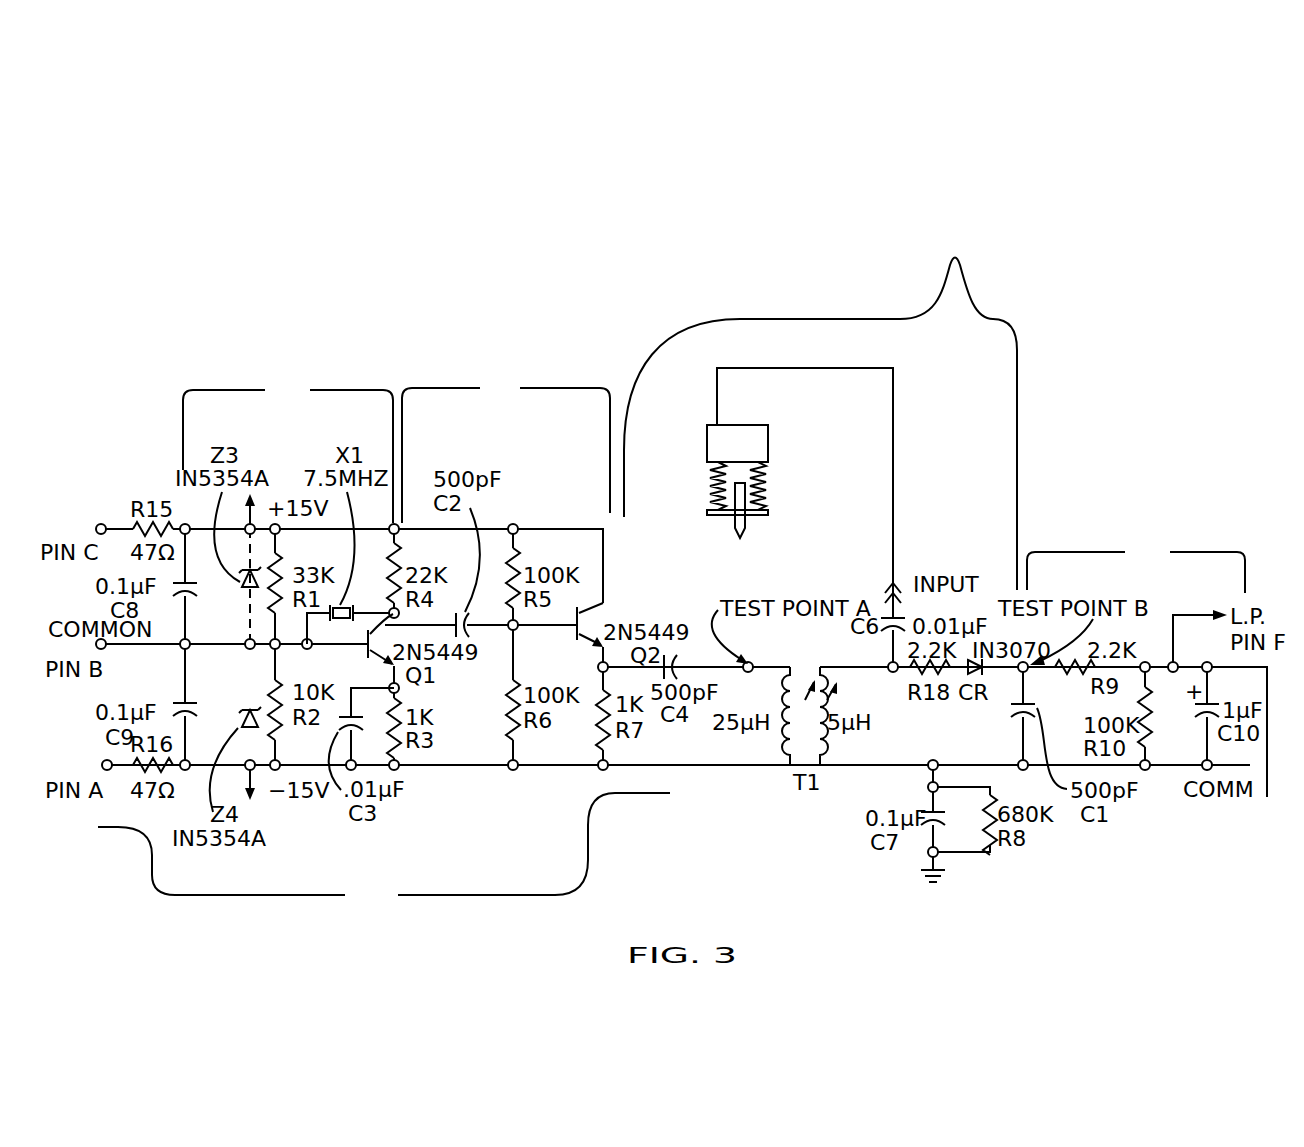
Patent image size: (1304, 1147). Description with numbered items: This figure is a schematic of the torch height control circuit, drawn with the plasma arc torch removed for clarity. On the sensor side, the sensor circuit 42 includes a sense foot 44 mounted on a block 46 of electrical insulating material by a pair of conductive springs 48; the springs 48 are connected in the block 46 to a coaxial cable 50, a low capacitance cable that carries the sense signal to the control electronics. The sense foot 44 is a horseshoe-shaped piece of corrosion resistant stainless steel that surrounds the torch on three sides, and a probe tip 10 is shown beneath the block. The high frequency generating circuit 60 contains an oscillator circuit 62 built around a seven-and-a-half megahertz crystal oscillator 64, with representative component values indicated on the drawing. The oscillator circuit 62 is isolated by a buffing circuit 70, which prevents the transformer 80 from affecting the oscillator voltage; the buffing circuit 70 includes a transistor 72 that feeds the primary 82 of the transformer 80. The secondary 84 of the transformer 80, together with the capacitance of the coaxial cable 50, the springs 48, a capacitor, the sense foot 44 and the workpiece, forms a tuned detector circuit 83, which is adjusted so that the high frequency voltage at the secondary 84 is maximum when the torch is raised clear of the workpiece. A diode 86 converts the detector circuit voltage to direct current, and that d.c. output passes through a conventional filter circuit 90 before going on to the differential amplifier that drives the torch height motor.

The probe tip 10 is at (745, 530).
The sensor circuit 42 is at (905, 512).
The sense foot 44 is at (706, 512).
The block 46 is at (706, 440).
The conductive springs 48 is at (722, 478).
The coaxial cable 50 is at (895, 437).
The high frequency generating circuit 60 is at (384, 851).
The oscillator circuit 62 is at (288, 449).
The crystal oscillator 64 is at (399, 614).
The buffing circuit 70 is at (506, 448).
The transistor 72 is at (606, 611).
The transformer 80 is at (803, 672).
The primary 82 is at (787, 738).
The detector circuit 83 is at (820, 410).
The secondary 84 is at (833, 742).
The diode 86 is at (977, 674).
The filter circuit 90 is at (1136, 565).